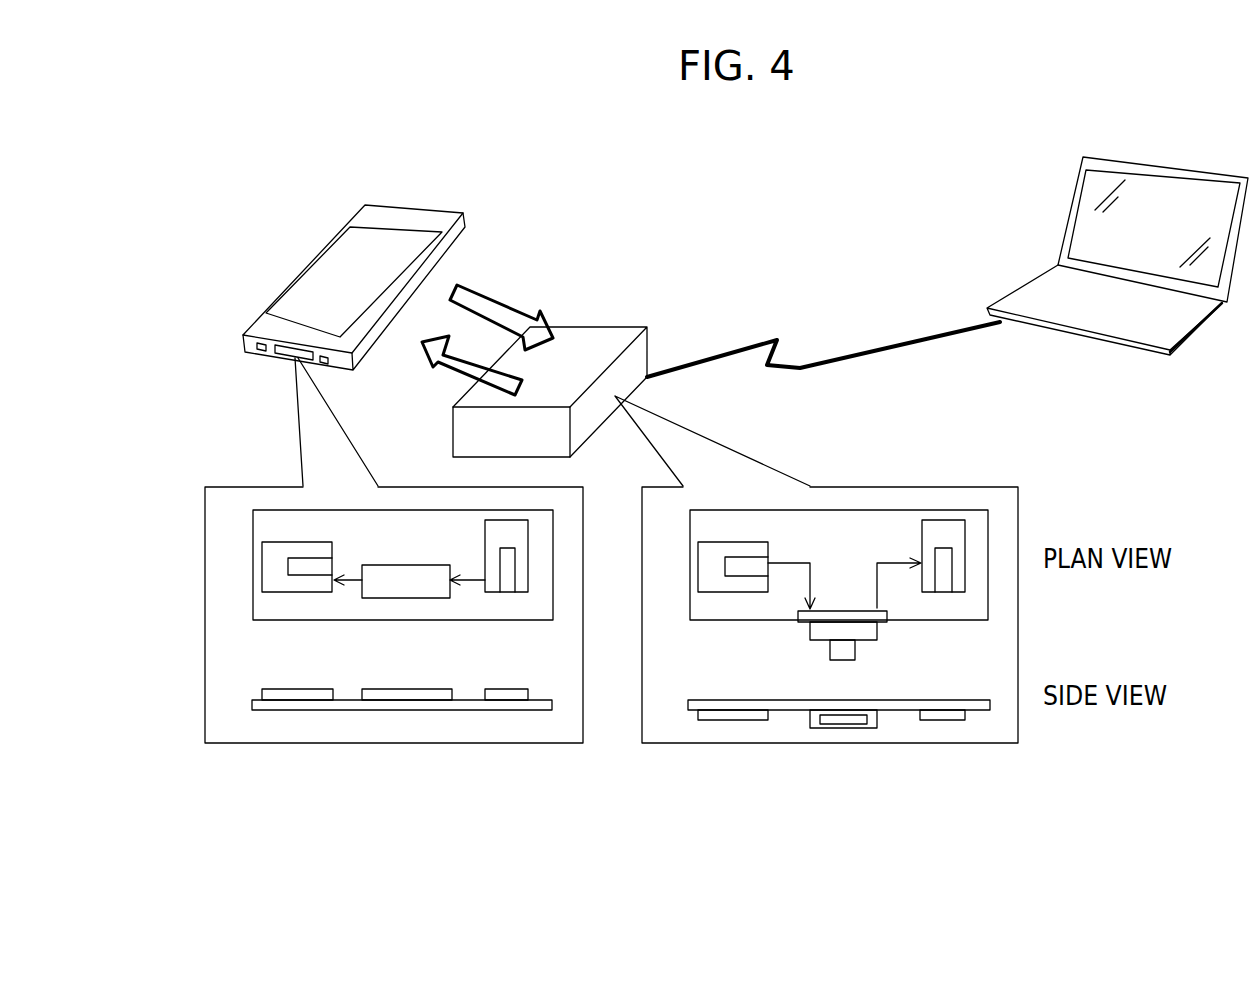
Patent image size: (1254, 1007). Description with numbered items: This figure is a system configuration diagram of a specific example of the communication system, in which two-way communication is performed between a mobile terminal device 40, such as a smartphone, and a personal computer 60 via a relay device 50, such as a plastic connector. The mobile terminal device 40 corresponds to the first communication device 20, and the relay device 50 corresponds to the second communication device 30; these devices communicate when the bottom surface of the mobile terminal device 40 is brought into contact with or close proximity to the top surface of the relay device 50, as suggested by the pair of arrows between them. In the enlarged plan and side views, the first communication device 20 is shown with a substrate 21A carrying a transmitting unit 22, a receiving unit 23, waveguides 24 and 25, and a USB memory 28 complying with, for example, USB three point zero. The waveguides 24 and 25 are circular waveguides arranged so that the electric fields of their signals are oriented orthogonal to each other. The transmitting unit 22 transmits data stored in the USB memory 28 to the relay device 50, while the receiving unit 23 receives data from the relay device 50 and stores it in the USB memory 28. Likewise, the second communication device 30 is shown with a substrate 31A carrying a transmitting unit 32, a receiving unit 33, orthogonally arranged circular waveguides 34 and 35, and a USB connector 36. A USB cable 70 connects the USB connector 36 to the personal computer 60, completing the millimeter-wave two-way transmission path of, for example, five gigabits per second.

The first communication device 20 is at (385, 738).
The substrate of first communication device 21A is at (460, 705).
The transmitting unit 22 is at (295, 587).
The receiving unit 23 is at (520, 587).
The waveguide 24 is at (328, 567).
The waveguide 25 is at (500, 558).
The USB memory 28 is at (405, 593).
The second communication device 30 is at (785, 738).
The substrate of second communication device 31A is at (895, 705).
The transmitting unit 32 is at (955, 587).
The receiving unit 33 is at (732, 587).
The waveguide 34 is at (935, 558).
The waveguide 35 is at (765, 567).
The USB connector 36 is at (852, 652).
The mobile terminal device 40 is at (407, 203).
The relay device 50 is at (600, 326).
The personal computer 60 is at (1087, 334).
The USB cable 70 is at (857, 358).